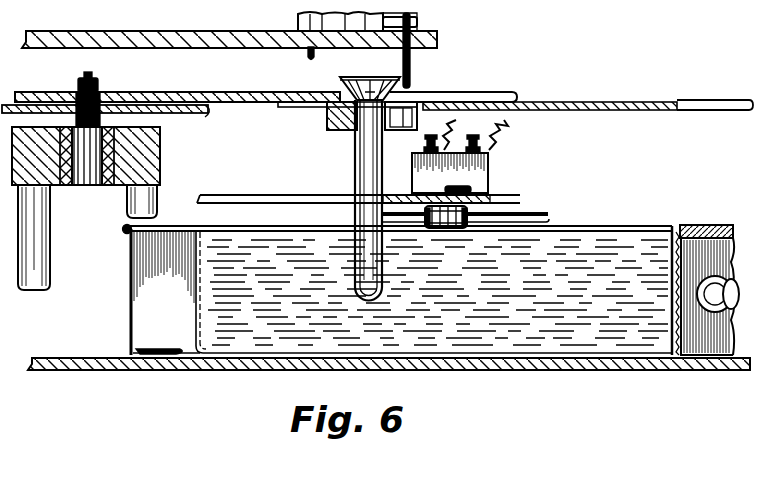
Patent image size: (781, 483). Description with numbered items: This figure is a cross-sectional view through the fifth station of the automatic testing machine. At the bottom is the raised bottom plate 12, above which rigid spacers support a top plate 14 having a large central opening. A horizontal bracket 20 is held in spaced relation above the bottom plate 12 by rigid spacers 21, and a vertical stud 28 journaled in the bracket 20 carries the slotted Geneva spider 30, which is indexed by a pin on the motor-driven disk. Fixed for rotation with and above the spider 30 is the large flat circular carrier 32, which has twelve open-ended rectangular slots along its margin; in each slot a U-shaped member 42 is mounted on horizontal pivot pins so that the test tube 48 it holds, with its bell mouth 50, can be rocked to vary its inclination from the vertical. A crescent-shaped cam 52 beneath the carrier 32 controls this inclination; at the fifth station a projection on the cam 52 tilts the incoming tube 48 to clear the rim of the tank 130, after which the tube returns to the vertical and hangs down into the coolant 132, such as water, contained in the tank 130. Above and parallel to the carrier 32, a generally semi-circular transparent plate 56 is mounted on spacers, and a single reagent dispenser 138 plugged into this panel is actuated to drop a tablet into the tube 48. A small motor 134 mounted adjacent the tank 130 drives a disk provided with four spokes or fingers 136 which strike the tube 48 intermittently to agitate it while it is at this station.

The bottom plate 12 is at (66, 360).
The top plate 14 is at (636, 93).
The horizontal bracket 20 is at (162, 163).
The rigid spacers 21 is at (55, 272).
The vertical stud 28 is at (90, 187).
The Geneva spider 30 is at (205, 116).
The carrier 32 is at (266, 92).
The U-shaped member 42 is at (327, 118).
The test tube 48 is at (355, 165).
The bell mouth 50 is at (340, 82).
The cam 52 is at (275, 195).
The semi-circular plate 56 is at (206, 46).
The tank 130 is at (714, 228).
The coolant 132 is at (398, 290).
The small motor 134 is at (488, 178).
The fingers 136 is at (352, 214).
The reagent dispenser 138 is at (291, 18).